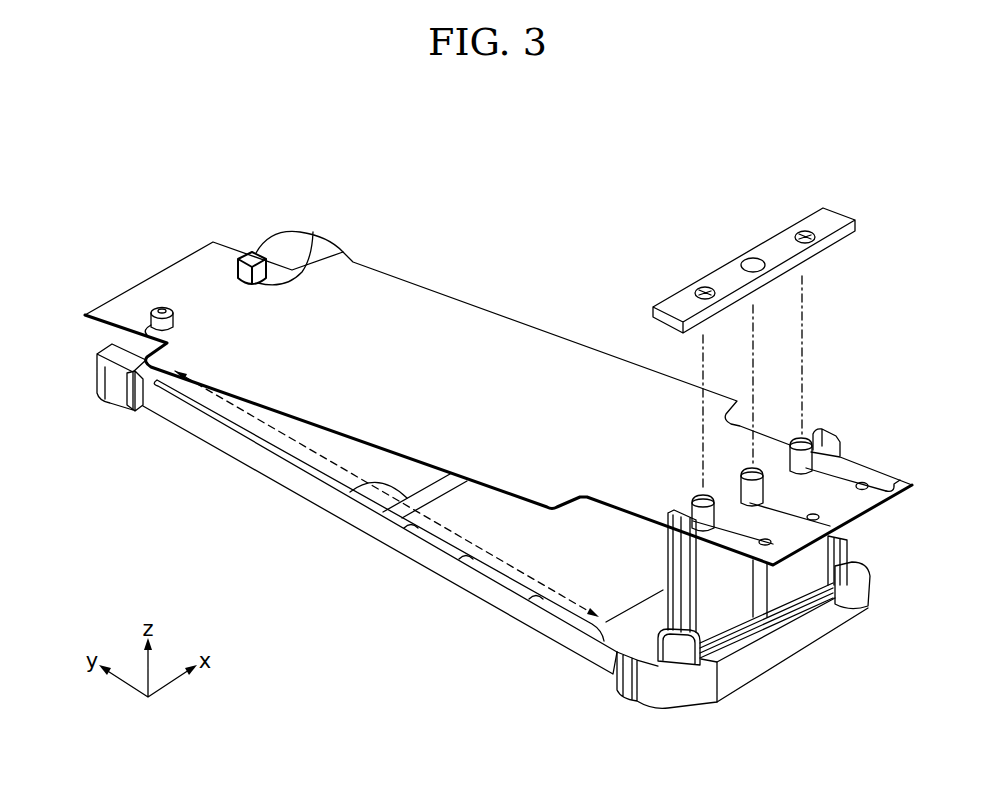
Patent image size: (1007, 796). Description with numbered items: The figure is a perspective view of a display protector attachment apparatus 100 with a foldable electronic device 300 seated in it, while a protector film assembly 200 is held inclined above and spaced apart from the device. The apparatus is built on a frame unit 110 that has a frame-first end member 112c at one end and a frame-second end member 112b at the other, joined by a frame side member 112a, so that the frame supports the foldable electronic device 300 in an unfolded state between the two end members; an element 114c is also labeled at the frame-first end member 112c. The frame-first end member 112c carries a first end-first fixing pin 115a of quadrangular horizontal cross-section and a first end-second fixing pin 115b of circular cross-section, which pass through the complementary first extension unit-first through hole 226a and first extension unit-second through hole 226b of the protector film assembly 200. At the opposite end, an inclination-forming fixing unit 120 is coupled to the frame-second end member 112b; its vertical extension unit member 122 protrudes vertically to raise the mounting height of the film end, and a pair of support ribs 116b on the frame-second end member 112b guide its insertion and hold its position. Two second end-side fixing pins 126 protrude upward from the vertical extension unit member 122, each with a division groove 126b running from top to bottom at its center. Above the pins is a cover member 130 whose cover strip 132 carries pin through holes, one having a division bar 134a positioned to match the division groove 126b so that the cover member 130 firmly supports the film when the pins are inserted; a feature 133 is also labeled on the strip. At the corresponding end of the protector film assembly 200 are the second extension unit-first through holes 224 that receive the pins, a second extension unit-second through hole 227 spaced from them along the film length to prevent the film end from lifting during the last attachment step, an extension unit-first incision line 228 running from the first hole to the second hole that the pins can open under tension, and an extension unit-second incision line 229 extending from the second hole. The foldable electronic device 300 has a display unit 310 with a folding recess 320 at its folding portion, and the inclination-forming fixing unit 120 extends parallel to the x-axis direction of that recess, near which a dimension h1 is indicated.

The display protector attachment apparatus 100 is at (335, 658).
The frame unit 110 is at (602, 688).
The frame side member 112a is at (240, 453).
The frame-second end member 112b is at (767, 645).
The frame-first end member 112c is at (116, 352).
The protrusion of corner block 114c is at (136, 405).
The first end-first fixing pin 115a is at (253, 252).
The first end-second fixing pin 115b is at (160, 305).
The support ribs 116b is at (685, 665).
The inclination-forming fixing unit 120 is at (727, 620).
The vertical extension unit member 122 is at (777, 597).
The second end-side fixing pins 126 is at (792, 427).
The division groove 126b is at (812, 440).
The cover member 130 is at (845, 134).
The cover strip 132 is at (847, 210).
The hole of fixing bar 133 is at (750, 257).
The division bar 134a is at (800, 232).
The protector film assembly 200 is at (495, 302).
The second extension unit-first through holes 224 is at (836, 440).
The first extension unit-first through hole 226a is at (312, 248).
The first extension unit-second through hole 226b is at (147, 324).
The second extension unit-second through hole 227 is at (862, 489).
The extension unit-first incision line 228 is at (835, 463).
The extension unit-second incision line 229 is at (890, 489).
The foldable electronic device 300 is at (505, 556).
The display unit 310 is at (463, 547).
The folding recess 320 is at (357, 493).
The rib height h1 is at (378, 473).